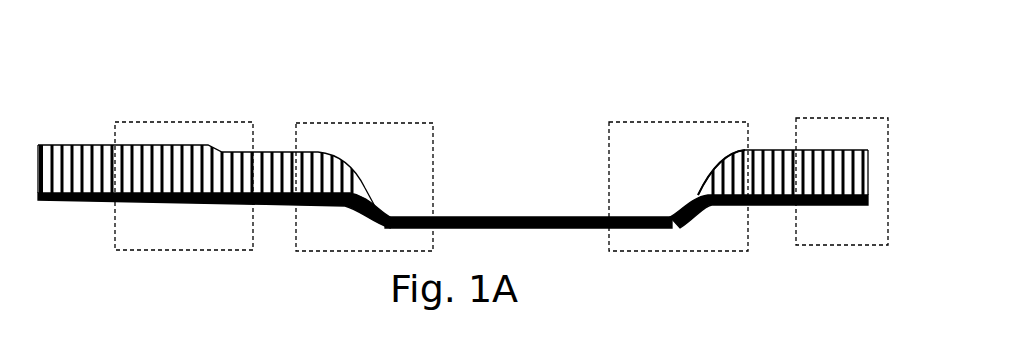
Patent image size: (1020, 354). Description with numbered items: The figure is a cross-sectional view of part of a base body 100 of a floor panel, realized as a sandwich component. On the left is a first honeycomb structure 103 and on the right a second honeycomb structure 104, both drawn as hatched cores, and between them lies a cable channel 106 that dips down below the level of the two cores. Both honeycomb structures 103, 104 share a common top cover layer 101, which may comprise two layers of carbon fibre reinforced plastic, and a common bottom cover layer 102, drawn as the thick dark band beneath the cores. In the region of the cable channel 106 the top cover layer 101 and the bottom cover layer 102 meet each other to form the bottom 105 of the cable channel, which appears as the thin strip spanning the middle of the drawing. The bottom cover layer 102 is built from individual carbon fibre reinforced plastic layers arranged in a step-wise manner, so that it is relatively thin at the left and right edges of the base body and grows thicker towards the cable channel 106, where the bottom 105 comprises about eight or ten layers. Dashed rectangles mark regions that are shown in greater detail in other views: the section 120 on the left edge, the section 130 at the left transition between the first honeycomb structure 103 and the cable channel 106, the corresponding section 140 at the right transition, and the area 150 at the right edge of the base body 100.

The base body 100 is at (586, 98).
The top cover layer 101 is at (778, 150).
The bottom cover layer 102 is at (758, 208).
The first honeycomb structure 103 is at (330, 178).
The second honeycomb structure 104 is at (733, 180).
The bottom of the cable channel 105 is at (513, 205).
The cable channel 106 is at (458, 178).
The section 120 is at (167, 250).
The section 130 is at (363, 251).
The third region 140 is at (657, 251).
The area 150 is at (848, 118).